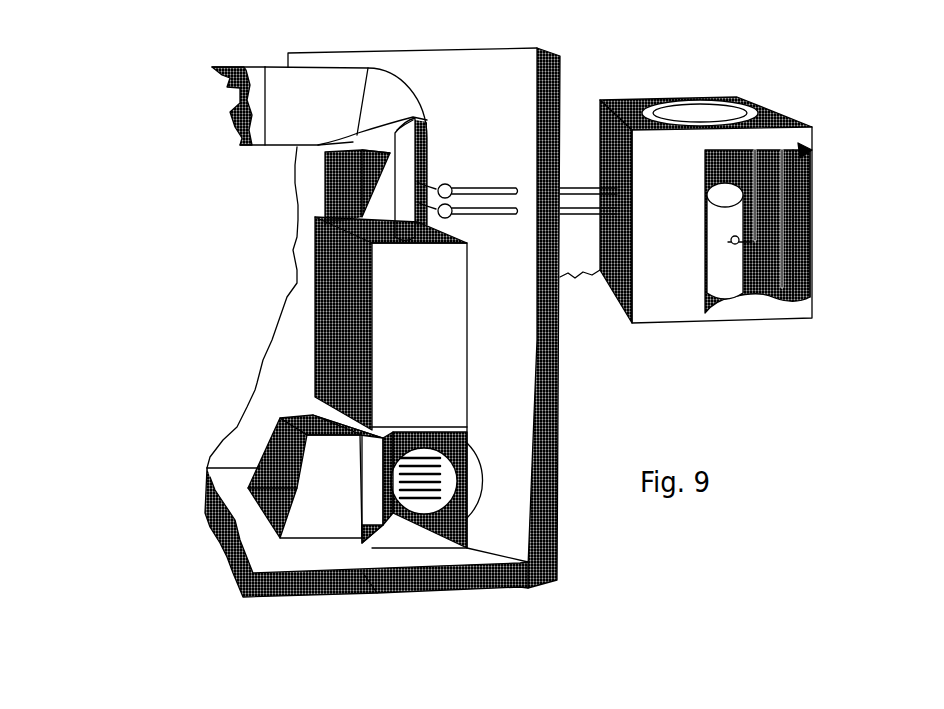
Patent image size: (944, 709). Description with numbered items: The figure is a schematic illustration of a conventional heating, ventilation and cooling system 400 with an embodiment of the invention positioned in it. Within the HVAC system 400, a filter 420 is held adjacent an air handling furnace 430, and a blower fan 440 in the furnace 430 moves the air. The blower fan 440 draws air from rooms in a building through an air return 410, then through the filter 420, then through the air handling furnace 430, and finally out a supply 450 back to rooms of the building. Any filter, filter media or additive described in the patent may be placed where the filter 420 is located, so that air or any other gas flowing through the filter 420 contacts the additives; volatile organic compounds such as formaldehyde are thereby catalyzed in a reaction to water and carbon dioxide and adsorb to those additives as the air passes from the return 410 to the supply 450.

The heating, ventilation and cooling system 400 is at (200, 227).
The air return 410 is at (350, 507).
The filter 420 is at (373, 450).
The air handling furnace 430 is at (445, 367).
The blower fan 440 is at (450, 468).
The supply 450 is at (325, 111).